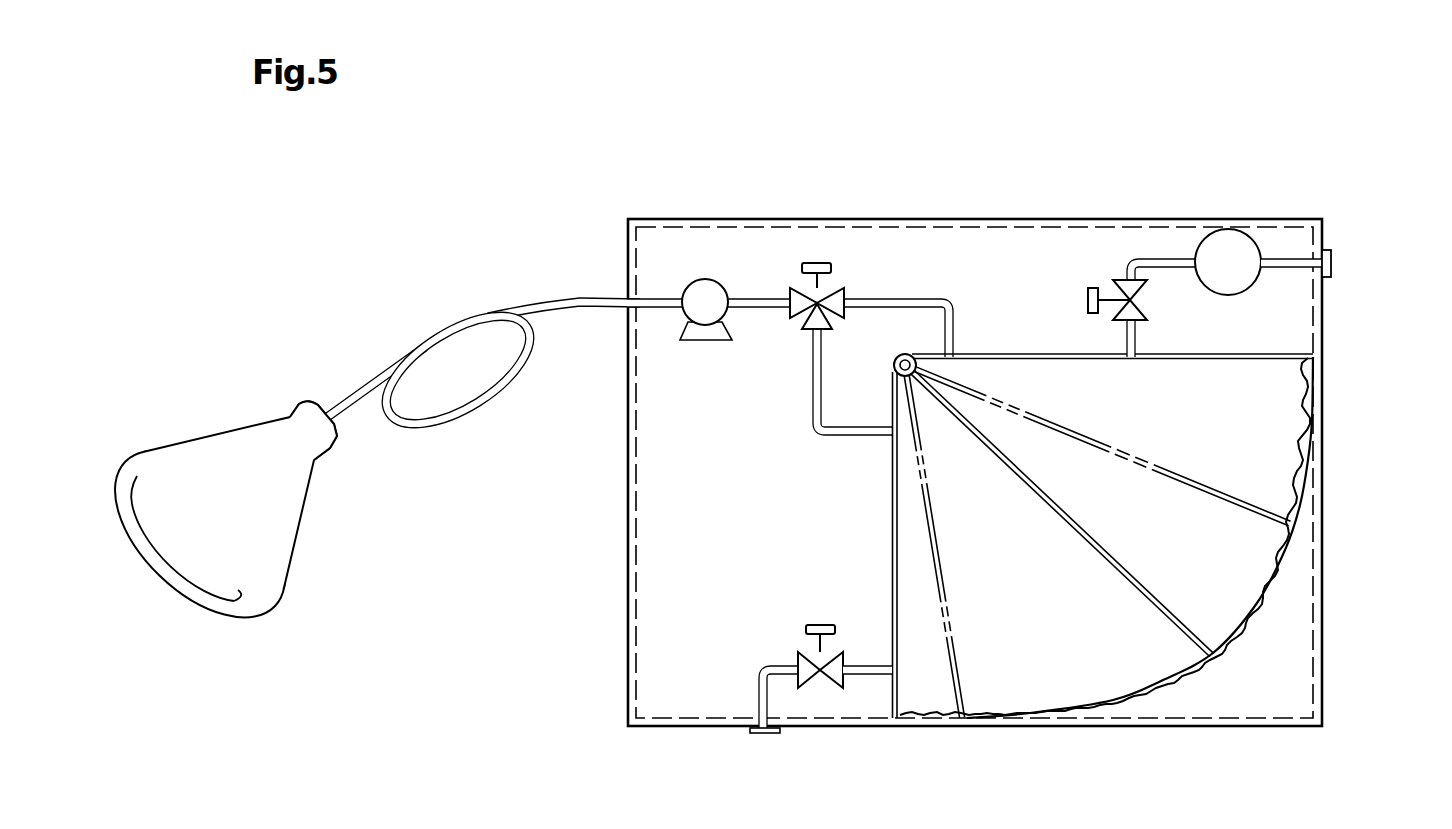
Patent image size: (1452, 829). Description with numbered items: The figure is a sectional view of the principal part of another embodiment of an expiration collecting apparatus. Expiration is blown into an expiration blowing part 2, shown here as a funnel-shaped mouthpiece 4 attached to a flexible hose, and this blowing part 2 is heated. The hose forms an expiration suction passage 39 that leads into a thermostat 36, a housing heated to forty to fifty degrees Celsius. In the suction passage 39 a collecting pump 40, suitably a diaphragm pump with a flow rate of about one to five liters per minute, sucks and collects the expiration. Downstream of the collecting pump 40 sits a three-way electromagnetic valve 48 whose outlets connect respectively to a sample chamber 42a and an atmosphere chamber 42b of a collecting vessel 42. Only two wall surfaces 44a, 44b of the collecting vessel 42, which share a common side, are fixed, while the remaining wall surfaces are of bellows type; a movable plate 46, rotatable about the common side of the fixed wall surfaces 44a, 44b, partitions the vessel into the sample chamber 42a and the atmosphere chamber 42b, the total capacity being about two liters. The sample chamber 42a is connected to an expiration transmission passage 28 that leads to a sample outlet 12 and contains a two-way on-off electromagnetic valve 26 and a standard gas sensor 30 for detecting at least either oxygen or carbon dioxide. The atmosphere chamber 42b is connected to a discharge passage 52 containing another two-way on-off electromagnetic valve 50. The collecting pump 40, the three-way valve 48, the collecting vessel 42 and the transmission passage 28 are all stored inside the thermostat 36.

The expiration blowing part 2 is at (402, 341).
The suction cup 4 is at (231, 433).
The sample outlet 12 is at (1333, 252).
The two-way on-off electromagnetic valve 26 is at (1117, 280).
The expiration transmission passage 28 is at (1127, 337).
The standard gas sensor 30 is at (1228, 248).
The thermostat 36 is at (952, 219).
The expiration suction passage 39 is at (763, 298).
The collecting pump 40 is at (700, 279).
The collecting vessel 42 is at (1275, 578).
The sample chamber 42a is at (1267, 420).
The atmosphere chamber 42b is at (1040, 683).
The fixed wall surface 44a is at (993, 352).
The fixed wall surface 44b is at (890, 540).
The movable plate 46 is at (1190, 621).
The three-way electromagnetic valve 48 is at (820, 262).
The two-way on-off electromagnetic valve 50 is at (798, 652).
The discharge passage 52 is at (870, 673).